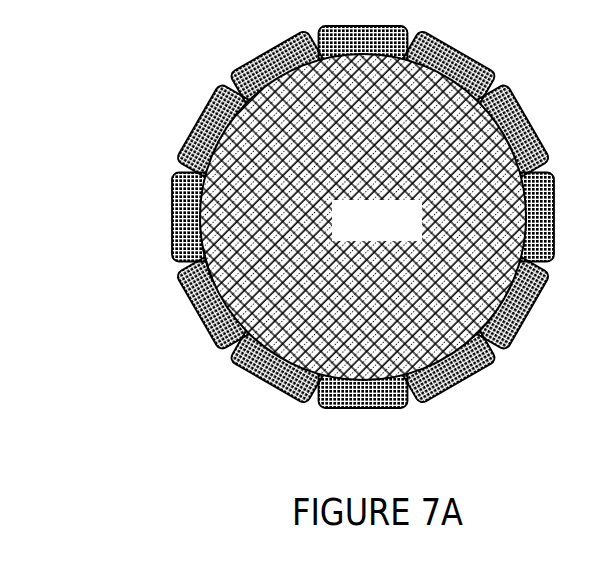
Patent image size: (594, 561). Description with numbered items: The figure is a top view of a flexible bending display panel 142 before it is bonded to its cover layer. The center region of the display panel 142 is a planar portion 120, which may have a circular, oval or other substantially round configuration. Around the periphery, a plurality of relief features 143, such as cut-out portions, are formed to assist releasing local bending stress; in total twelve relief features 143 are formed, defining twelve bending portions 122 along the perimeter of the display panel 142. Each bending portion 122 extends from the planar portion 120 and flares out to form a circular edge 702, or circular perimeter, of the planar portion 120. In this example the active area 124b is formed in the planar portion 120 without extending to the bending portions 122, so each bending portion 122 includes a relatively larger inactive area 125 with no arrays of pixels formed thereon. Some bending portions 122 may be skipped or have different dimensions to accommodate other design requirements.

The display panel 142 is at (152, 172).
The relief features 143 is at (222, 358).
The circular edge 702 is at (203, 260).
The planar portion 120 is at (290, 312).
The bending portion 122 is at (476, 363).
The inactive area 125 is at (533, 289).
The active area 124b is at (412, 234).